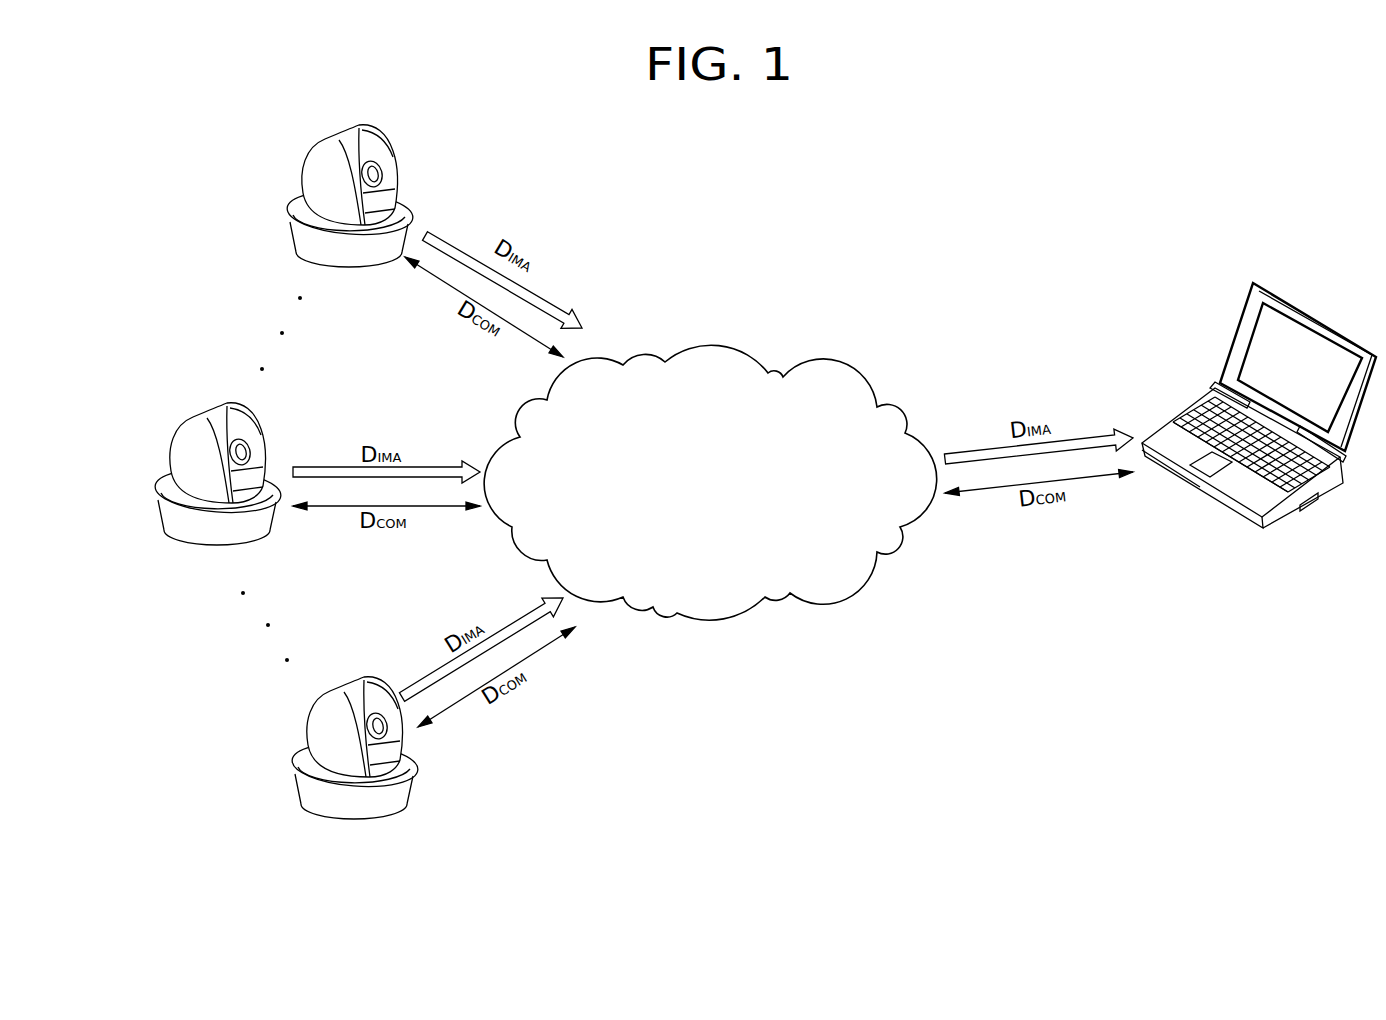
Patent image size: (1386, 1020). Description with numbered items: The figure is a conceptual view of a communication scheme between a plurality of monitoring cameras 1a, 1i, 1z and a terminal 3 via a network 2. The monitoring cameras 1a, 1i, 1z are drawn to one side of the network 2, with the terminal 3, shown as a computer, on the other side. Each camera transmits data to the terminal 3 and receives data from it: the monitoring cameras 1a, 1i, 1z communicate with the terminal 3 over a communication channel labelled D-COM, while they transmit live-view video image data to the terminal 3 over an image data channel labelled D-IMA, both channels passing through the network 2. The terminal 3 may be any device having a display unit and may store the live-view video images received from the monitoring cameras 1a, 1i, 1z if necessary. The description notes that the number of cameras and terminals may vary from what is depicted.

The monitoring camera 1a is at (300, 240).
The monitoring camera 1i is at (187, 533).
The monitoring camera 1z is at (322, 808).
The network 2 is at (711, 345).
The terminal 3 is at (1182, 417).